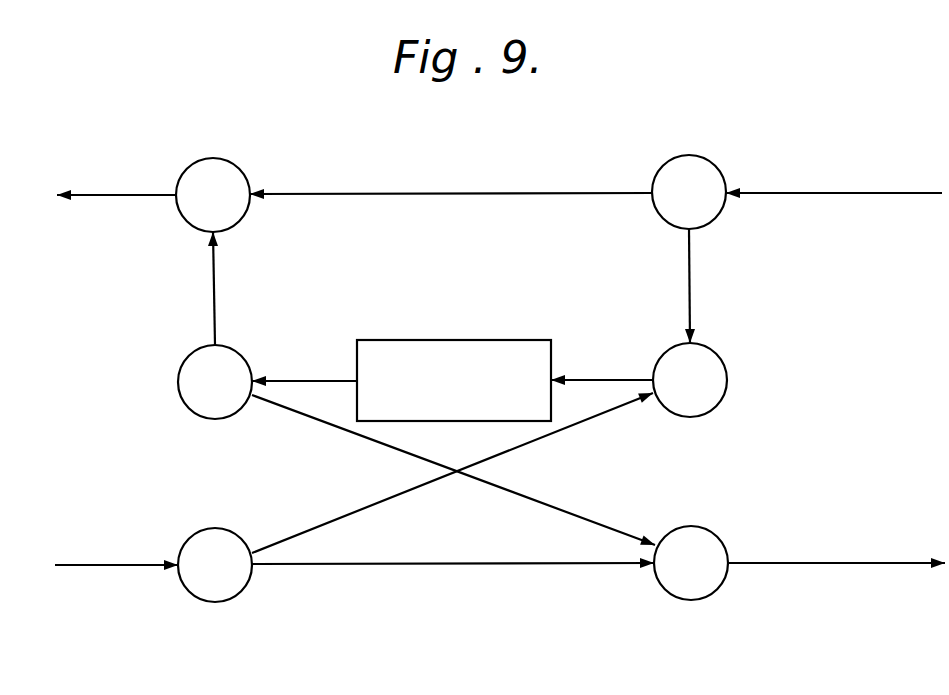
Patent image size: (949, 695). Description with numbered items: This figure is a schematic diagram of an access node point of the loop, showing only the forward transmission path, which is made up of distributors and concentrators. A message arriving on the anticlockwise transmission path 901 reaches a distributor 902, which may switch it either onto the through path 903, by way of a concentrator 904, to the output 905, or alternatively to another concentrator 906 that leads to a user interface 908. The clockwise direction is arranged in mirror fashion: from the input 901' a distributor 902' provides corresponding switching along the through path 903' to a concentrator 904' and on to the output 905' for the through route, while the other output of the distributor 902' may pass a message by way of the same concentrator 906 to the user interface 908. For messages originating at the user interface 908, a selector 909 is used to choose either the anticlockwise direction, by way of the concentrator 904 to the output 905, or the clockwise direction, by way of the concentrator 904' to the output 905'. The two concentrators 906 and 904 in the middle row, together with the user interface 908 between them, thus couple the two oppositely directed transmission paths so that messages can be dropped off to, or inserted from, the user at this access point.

The anticlockwise transmission path 901 is at (835, 148).
The distributor 902 is at (722, 163).
The through path 903 is at (451, 148).
The concentrator 904 is at (251, 166).
The output 905 is at (121, 150).
The concentrator 906 is at (718, 353).
The user interface 908 is at (460, 340).
The selector 909 is at (241, 355).
The input 901' is at (116, 603).
The distributor 902' is at (228, 587).
The through path 903' is at (453, 602).
The concentrator 904' is at (676, 585).
The output 905' is at (836, 601).